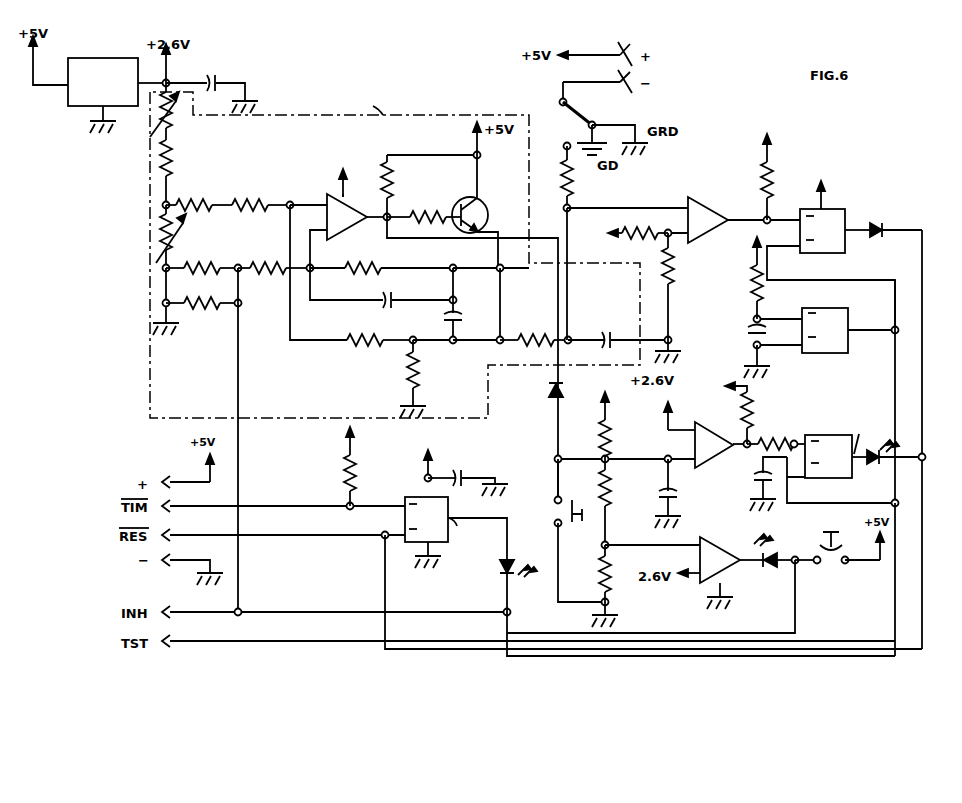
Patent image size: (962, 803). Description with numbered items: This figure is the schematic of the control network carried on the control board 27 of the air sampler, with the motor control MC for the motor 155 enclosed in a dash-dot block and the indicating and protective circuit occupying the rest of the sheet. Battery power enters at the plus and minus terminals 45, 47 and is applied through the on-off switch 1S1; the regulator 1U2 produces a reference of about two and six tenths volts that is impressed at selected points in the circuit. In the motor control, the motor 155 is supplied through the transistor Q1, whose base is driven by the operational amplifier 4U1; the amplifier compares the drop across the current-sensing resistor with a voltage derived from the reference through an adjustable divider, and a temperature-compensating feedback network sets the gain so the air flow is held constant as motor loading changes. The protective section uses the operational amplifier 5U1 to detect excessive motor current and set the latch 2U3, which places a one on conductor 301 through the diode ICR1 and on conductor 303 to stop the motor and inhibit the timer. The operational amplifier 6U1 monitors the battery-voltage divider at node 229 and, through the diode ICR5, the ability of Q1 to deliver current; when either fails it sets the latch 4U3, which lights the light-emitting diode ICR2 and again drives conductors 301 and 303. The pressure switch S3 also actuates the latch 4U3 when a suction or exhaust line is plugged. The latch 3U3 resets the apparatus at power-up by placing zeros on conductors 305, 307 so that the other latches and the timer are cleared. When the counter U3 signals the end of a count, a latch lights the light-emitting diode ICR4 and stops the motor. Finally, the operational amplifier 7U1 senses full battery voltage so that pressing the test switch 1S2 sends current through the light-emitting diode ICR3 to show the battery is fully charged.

The control board 27 is at (425, 89).
The positive battery terminal switch contact 45 is at (616, 48).
The negative battery terminal switch contact 47 is at (617, 88).
The motor 155 is at (532, 306).
The voltage divider node 229 is at (640, 533).
The conductor 301 is at (922, 589).
The conductor 303 is at (242, 440).
The conductor 305 is at (892, 388).
The conductor 307 is at (880, 586).
The regulator 1U2 is at (103, 95).
The operational amplifier 4U1 is at (343, 196).
The operational amplifier 5U1 is at (719, 195).
The operational amplifier 6U1 is at (720, 427).
The operational amplifier 7U1 is at (731, 543).
The latch 2U3 is at (830, 219).
The latch 3U3 is at (812, 311).
The latch 4U3 is at (849, 438).
The counter U3 is at (435, 509).
The transistor Q1 is at (476, 210).
The switch 1S1 is at (598, 108).
The test switch 1S2 is at (822, 536).
The pressure switch S3 is at (580, 503).
The diode ICR1 is at (892, 246).
The light-emitting diode ICR2 is at (887, 464).
The light-emitting diode ICR3 is at (762, 570).
The light-emitting diode ICR4 is at (500, 565).
The diode ICR5 is at (549, 388).